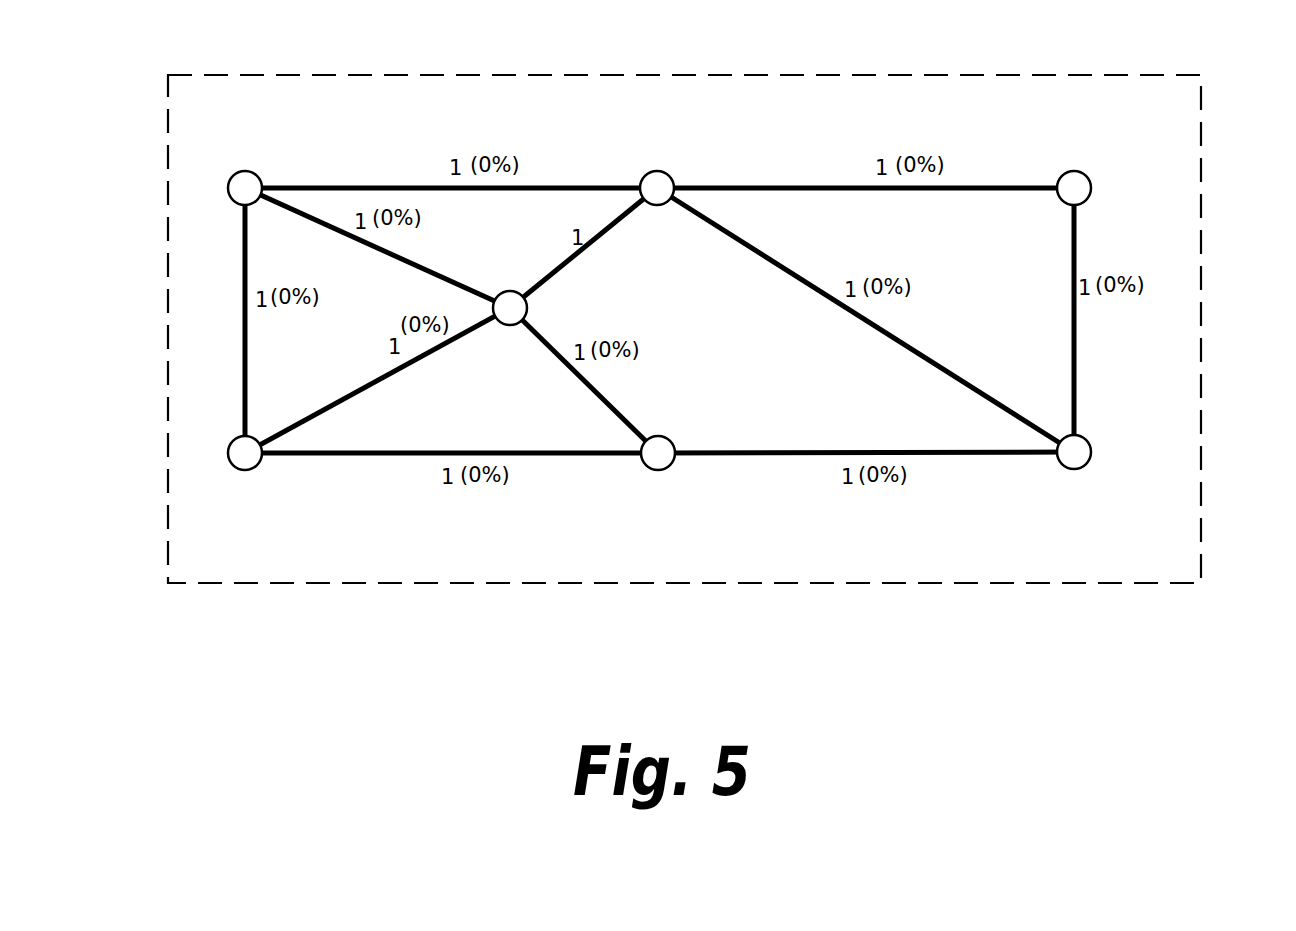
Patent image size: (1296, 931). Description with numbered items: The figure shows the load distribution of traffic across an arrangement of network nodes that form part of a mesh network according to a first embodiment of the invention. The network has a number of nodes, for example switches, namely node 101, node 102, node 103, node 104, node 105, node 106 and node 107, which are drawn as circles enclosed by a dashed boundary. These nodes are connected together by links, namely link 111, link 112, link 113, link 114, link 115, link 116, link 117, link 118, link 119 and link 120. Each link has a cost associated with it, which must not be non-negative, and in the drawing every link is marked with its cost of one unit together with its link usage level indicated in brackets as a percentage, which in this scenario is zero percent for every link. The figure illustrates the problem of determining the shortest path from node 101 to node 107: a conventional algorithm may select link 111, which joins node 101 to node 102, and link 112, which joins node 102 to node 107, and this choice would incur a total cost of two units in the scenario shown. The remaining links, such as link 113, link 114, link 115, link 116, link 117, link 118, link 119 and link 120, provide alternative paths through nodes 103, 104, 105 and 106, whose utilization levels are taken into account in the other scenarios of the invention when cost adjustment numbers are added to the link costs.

The node 101 is at (245, 175).
The node 102 is at (657, 175).
The node 103 is at (510, 295).
The node 104 is at (245, 469).
The node 105 is at (658, 469).
The node 106 is at (1074, 469).
The node 107 is at (1074, 175).
The link 111 is at (351, 187).
The link 112 is at (733, 187).
The link 113 is at (595, 240).
The link 114 is at (243, 258).
The link 115 is at (303, 425).
The link 116 is at (622, 420).
The link 117 is at (1000, 402).
The link 118 is at (1077, 253).
The link 119 is at (390, 455).
The link 120 is at (790, 453).